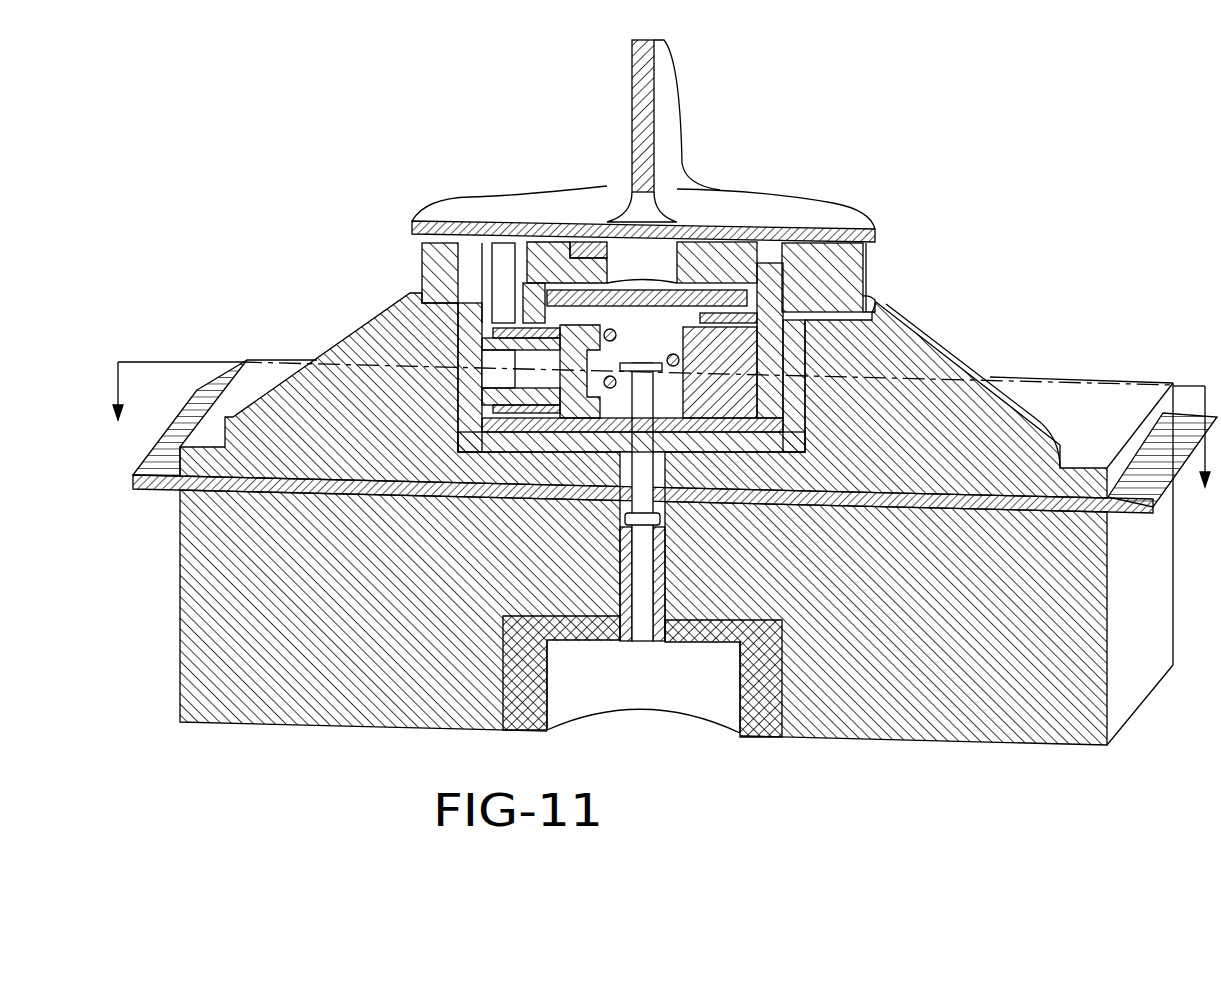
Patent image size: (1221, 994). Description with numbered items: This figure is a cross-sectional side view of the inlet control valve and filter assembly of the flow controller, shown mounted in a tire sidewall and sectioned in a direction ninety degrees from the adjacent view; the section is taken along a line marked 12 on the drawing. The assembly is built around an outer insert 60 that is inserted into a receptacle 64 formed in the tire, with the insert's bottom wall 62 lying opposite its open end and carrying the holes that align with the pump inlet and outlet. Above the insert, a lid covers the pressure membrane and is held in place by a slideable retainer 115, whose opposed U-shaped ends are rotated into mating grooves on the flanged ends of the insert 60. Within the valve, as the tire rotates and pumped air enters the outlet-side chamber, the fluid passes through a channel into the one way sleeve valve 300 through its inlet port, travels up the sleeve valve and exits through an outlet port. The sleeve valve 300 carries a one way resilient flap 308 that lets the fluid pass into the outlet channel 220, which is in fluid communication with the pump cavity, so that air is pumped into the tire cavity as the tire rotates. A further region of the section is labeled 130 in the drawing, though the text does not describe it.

The section line 12- 12 is at (662, 441).
The outer insert 60 is at (827, 283).
The bottom wall 62 is at (523, 440).
The receptacle 64 is at (943, 363).
The slideable retainer 115 is at (640, 105).
The lower insert / recess 130 is at (753, 693).
The outlet channel 220 is at (497, 268).
The one way sleeve valve 300 is at (476, 337).
The one way resilient flap 308 is at (507, 327).